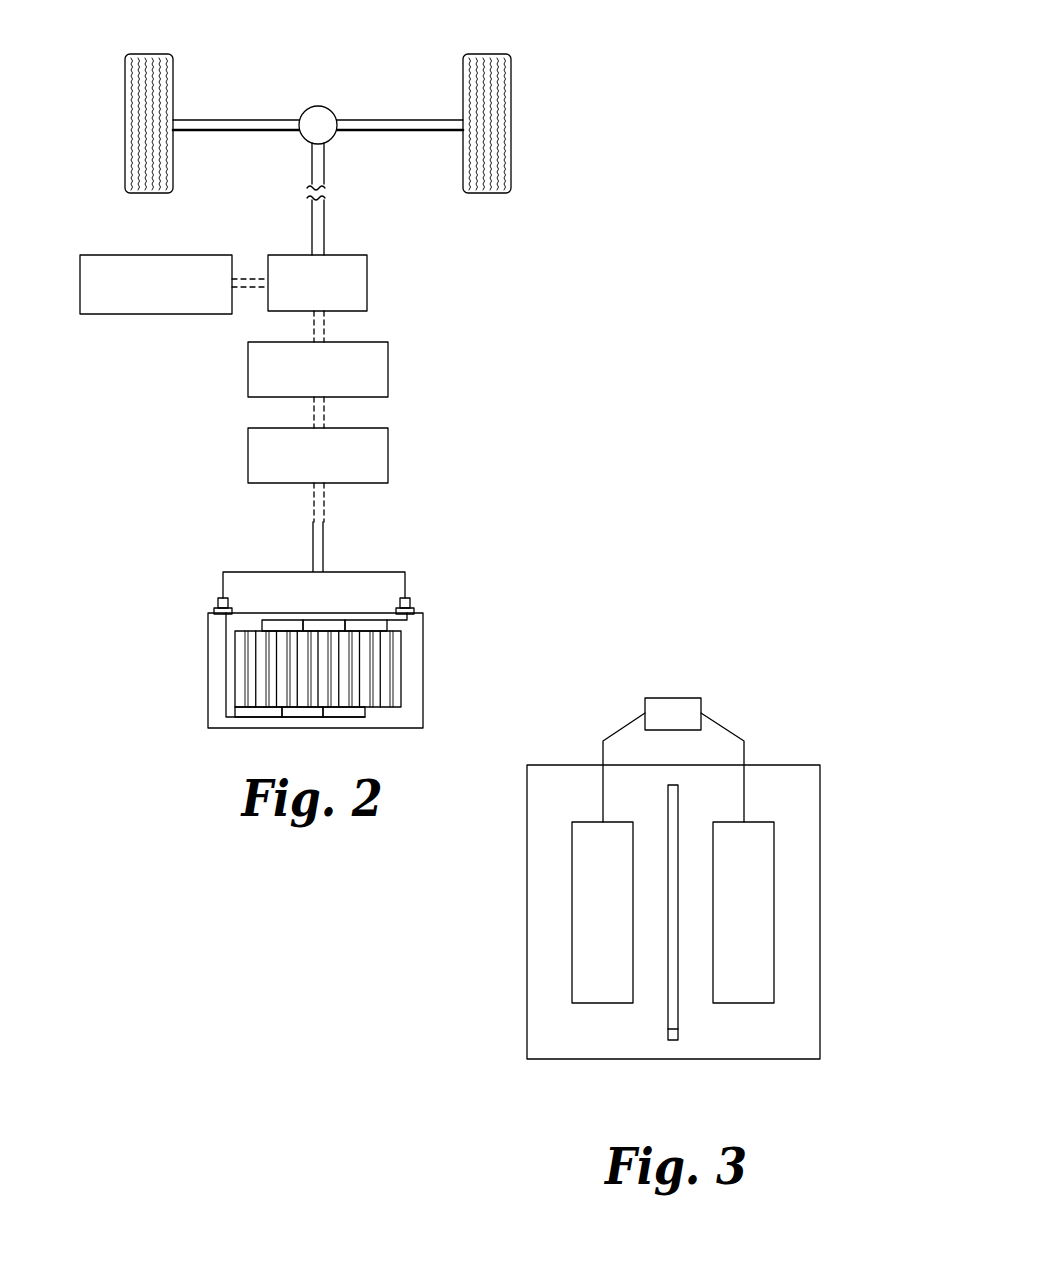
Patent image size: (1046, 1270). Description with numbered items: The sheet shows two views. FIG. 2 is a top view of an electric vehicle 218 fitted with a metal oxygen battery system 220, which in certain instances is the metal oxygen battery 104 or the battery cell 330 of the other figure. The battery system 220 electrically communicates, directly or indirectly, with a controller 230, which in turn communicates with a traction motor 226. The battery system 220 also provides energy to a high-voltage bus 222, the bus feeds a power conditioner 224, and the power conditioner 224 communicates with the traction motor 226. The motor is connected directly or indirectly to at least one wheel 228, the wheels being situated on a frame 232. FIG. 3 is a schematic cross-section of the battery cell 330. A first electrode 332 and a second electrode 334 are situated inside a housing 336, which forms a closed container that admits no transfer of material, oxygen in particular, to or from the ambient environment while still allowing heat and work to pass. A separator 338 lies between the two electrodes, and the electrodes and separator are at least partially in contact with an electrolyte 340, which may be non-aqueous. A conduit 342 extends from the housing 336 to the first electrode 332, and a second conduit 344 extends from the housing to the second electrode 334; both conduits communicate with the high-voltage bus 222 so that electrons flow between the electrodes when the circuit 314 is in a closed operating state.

In FIG. 2, the metal oxygen battery 104 is at (367, 706).
In FIG. 2, the vehicle 218 is at (339, 404).
In FIG. 2, the metal oxygen battery system 220 is at (305, 638).
In FIG. 2, the high-voltage bus 222 is at (388, 455).
In FIG. 2, the power conditioner 224 is at (388, 370).
In FIG. 2, the traction motor 226 is at (367, 283).
In FIG. 2, the wheel 228 is at (511, 122).
In FIG. 2, the controller 230 is at (80, 283).
In FIG. 2, the frame 232 is at (371, 120).
In FIG. 3, the circuit 314 is at (672, 698).
In FIG. 3, the battery cell 330 is at (637, 867).
In FIG. 3, the first electrode 332 is at (590, 849).
In FIG. 3, the second electrode 334 is at (755, 849).
In FIG. 3, the housing 336 is at (812, 1041).
In FIG. 3, the separator 338 is at (673, 1040).
In FIG. 3, the electrolyte 340 is at (602, 1036).
In FIG. 3, the conduit 342 is at (627, 723).
In FIG. 3, the conduit 344 is at (722, 723).